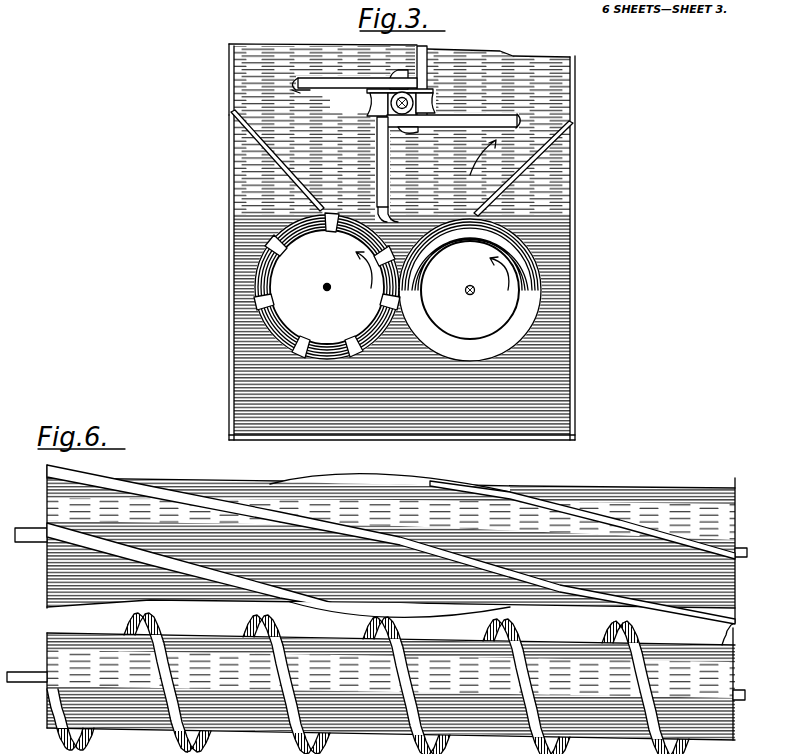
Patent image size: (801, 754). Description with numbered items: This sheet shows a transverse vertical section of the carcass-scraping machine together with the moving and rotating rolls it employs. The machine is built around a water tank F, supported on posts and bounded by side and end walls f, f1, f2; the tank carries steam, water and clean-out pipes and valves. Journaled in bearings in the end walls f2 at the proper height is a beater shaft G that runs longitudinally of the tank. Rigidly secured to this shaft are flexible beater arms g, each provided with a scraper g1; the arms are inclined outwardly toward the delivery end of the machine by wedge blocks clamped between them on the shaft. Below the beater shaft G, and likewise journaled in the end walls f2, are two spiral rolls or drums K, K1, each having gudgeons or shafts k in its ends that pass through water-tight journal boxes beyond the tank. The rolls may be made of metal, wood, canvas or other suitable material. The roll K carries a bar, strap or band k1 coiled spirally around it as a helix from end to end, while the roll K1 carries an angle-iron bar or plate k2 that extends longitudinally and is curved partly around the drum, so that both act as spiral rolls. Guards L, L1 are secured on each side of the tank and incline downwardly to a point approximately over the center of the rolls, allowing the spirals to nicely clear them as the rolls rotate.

In FIG. 3, the water tank F is at (545, 222).
In FIG. 3, the side wall f is at (575, 158).
In FIG. 3, the side wall f1 is at (225, 217).
In FIG. 3, the end wall f2 is at (260, 112).
In FIG. 3, the guard L is at (522, 174).
In FIG. 3, the guard L1 is at (265, 156).
In FIG. 3, the beater shaft G is at (409, 100).
In FIG. 3, the flexible beater arm g is at (343, 88).
In FIG. 3, the scraper g1 is at (299, 82).
In FIG. 6, the spiral roll or drum K is at (593, 686).
In FIG. 3, the spiral roll or drum K1 is at (327, 287).
In FIG. 6, the spiral roll or drum K1 is at (381, 544).
In FIG. 3, the roller shaft k is at (470, 294).
In FIG. 3, the spiral band k1 is at (352, 357).
In FIG. 6, the spiral band k1 is at (533, 747).
In FIG. 6, the angle-iron plate k2 is at (146, 481).